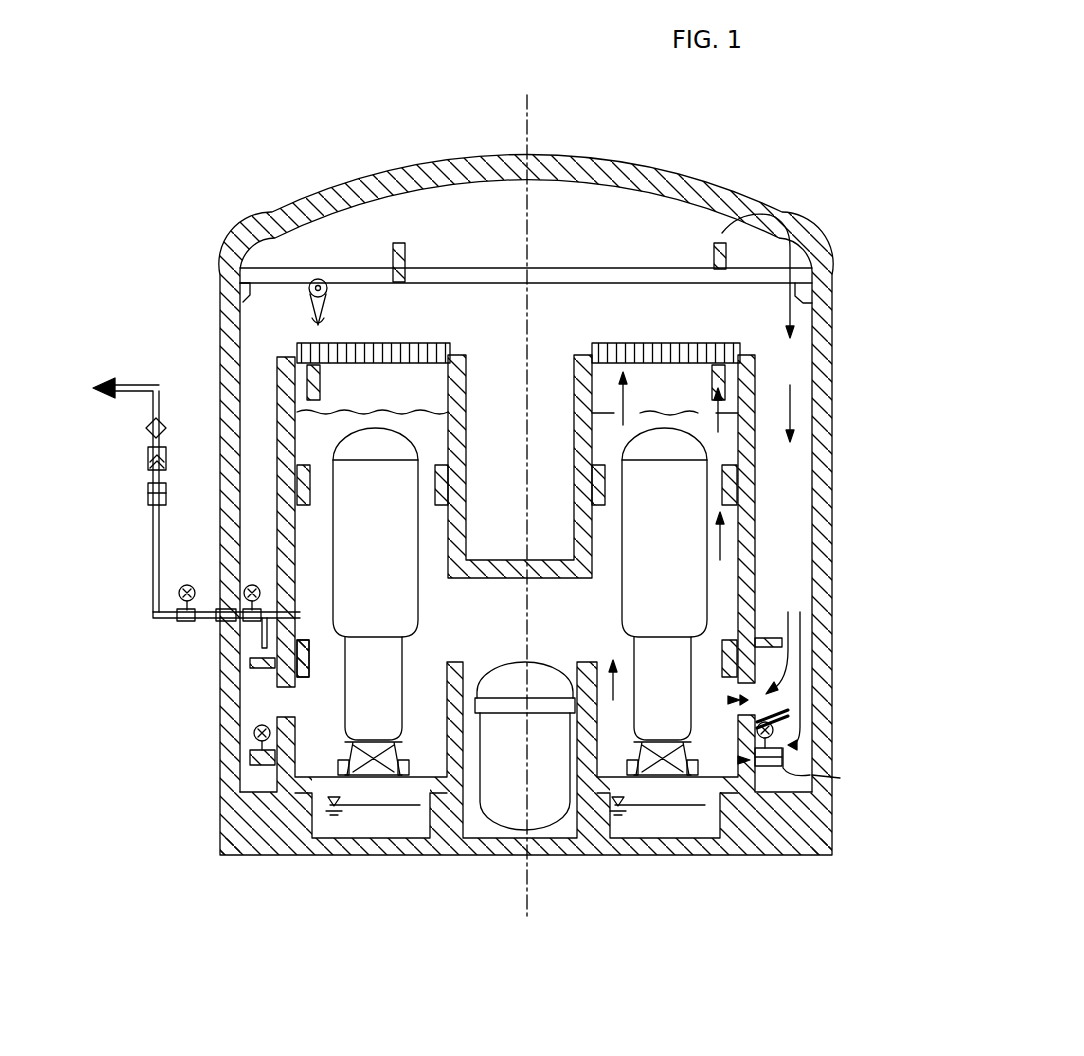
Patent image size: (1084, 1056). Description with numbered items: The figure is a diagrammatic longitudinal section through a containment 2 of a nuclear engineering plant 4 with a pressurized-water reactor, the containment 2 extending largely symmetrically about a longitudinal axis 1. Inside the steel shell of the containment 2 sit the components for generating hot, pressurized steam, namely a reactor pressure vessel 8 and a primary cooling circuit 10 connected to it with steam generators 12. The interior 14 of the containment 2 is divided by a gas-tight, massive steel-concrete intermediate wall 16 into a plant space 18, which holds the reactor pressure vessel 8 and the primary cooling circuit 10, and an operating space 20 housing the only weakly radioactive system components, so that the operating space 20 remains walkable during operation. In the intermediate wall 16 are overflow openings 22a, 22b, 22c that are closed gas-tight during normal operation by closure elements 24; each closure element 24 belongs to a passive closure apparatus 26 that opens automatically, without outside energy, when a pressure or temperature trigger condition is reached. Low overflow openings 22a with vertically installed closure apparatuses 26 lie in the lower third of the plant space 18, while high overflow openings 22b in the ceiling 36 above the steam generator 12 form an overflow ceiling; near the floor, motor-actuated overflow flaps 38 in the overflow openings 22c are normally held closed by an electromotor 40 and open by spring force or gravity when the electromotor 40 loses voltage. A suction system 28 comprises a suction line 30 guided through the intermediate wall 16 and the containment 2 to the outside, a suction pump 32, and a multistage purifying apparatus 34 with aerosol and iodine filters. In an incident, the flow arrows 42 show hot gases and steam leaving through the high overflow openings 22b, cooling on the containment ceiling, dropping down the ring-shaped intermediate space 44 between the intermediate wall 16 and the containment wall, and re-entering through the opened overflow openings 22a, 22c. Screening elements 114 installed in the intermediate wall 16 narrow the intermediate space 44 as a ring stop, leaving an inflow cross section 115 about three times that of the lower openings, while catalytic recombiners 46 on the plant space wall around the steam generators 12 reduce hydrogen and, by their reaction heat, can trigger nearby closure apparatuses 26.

The longitudinal axis 1 is at (528, 137).
The containment 2 is at (678, 156).
The nuclear engineering plant 4 is at (322, 940).
The reactor pressure vessel 8 is at (501, 663).
The primary cooling circuit 10 is at (404, 708).
The steam generator 12 is at (405, 653).
The interior 14 is at (466, 458).
The intermediate wall 16 is at (466, 505).
The plant space 18 is at (525, 598).
The operating space 20 is at (485, 214).
The overflow opening 22a is at (730, 698).
The overflow opening 22b is at (778, 386).
The overflow opening 22c is at (752, 757).
The closure element 24 is at (428, 424).
The passive closure apparatus 26 is at (445, 426).
The suction system 28 is at (190, 513).
The suction line 30 is at (150, 528).
The suction pump 32 is at (148, 427).
The multistage purifying apparatus 34 is at (123, 476).
The ceiling 36 is at (640, 410).
The overflow flap 38 is at (820, 775).
The electromotor 40 is at (805, 746).
The flow arrows 42 is at (577, 664).
The intermediate space 44 is at (790, 531).
The catalytic recombiner 46 is at (407, 256).
The screening element 114 is at (253, 652).
The inflow cross section 115 is at (250, 662).